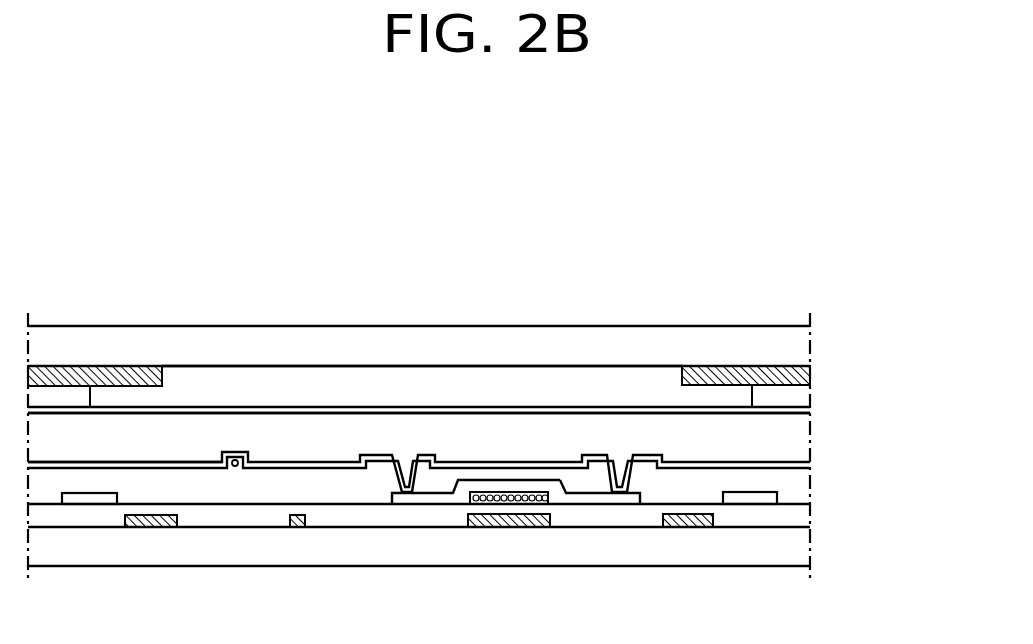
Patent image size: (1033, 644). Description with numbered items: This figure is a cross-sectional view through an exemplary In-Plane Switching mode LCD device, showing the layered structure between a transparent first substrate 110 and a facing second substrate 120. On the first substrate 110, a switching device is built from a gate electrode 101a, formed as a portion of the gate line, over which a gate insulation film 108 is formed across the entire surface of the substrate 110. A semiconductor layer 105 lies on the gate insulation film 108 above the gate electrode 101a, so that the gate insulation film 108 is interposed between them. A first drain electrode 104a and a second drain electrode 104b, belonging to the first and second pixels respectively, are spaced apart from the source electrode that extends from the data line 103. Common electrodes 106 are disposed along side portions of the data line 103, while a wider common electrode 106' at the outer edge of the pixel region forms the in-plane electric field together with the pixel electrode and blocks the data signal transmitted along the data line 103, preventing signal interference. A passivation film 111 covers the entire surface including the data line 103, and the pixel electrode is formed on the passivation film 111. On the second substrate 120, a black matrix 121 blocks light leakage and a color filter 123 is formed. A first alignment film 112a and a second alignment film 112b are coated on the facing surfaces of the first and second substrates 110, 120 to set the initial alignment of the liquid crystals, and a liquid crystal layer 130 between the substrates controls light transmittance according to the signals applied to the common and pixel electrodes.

The second substrate 120 is at (806, 342).
The color filter 123 is at (712, 372).
The black matrix 121 is at (637, 383).
The second alignment film 112b is at (806, 408).
The liquid crystal layer 130 is at (806, 442).
The first alignment film 112a is at (806, 463).
The passivation film 111 is at (806, 488).
The data line 103 is at (87, 494).
The first drain electrode 104a is at (423, 494).
The second drain electrode 104b is at (610, 494).
The gate electrode 101a is at (485, 505).
The gate insulation film 108 is at (806, 517).
The semiconductor layer 105 is at (534, 505).
The common electrode 106' is at (421, 570).
The common electrode 106 is at (292, 571).
The first substrate 110 is at (806, 546).